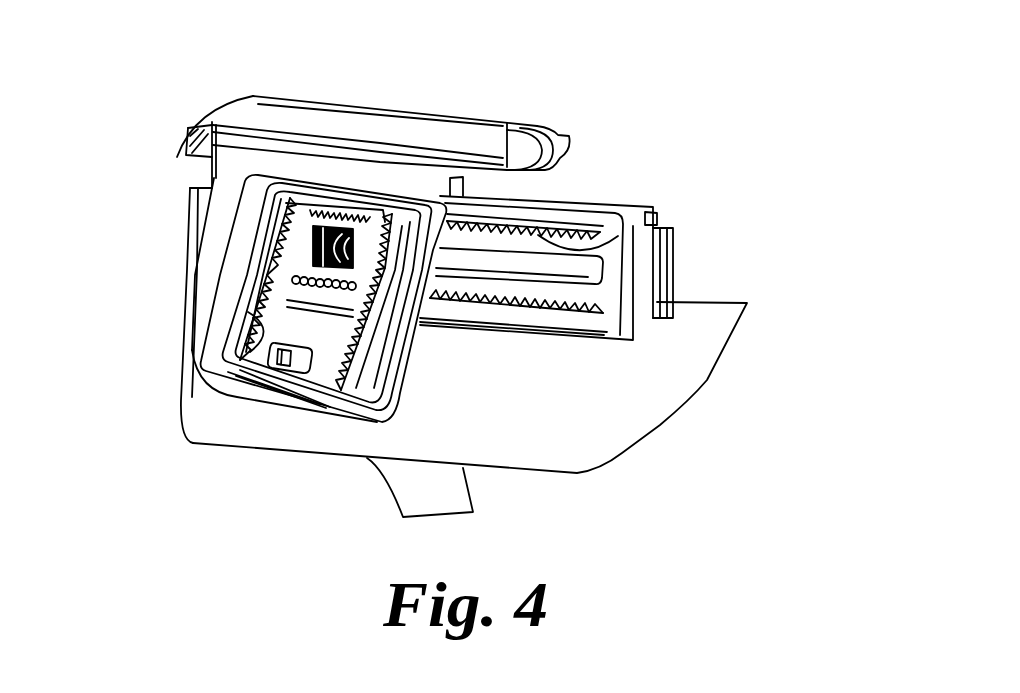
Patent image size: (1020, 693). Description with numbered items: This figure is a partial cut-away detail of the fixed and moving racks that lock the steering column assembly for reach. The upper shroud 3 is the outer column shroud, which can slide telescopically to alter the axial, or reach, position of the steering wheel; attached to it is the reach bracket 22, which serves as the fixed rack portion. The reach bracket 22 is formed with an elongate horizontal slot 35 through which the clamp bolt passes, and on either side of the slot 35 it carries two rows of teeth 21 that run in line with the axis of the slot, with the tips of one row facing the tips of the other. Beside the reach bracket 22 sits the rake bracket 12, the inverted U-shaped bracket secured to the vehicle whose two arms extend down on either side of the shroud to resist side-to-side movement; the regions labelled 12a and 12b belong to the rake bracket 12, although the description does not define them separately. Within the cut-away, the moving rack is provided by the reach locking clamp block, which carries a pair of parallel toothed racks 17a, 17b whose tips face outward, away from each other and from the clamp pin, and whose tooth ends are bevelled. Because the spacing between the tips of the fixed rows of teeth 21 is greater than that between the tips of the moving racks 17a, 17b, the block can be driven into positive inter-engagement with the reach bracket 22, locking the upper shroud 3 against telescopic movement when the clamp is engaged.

The upper shroud 3 is at (687, 403).
The rake bracket 12 is at (207, 183).
The housing side portion 12a is at (268, 340).
The housing bottom portion 12b is at (350, 363).
The toothed rack 17a is at (345, 208).
The toothed rack 17b is at (294, 278).
The rows of teeth 21 is at (598, 240).
The reach bracket 22 is at (593, 205).
The horizontal slot 35 is at (530, 275).